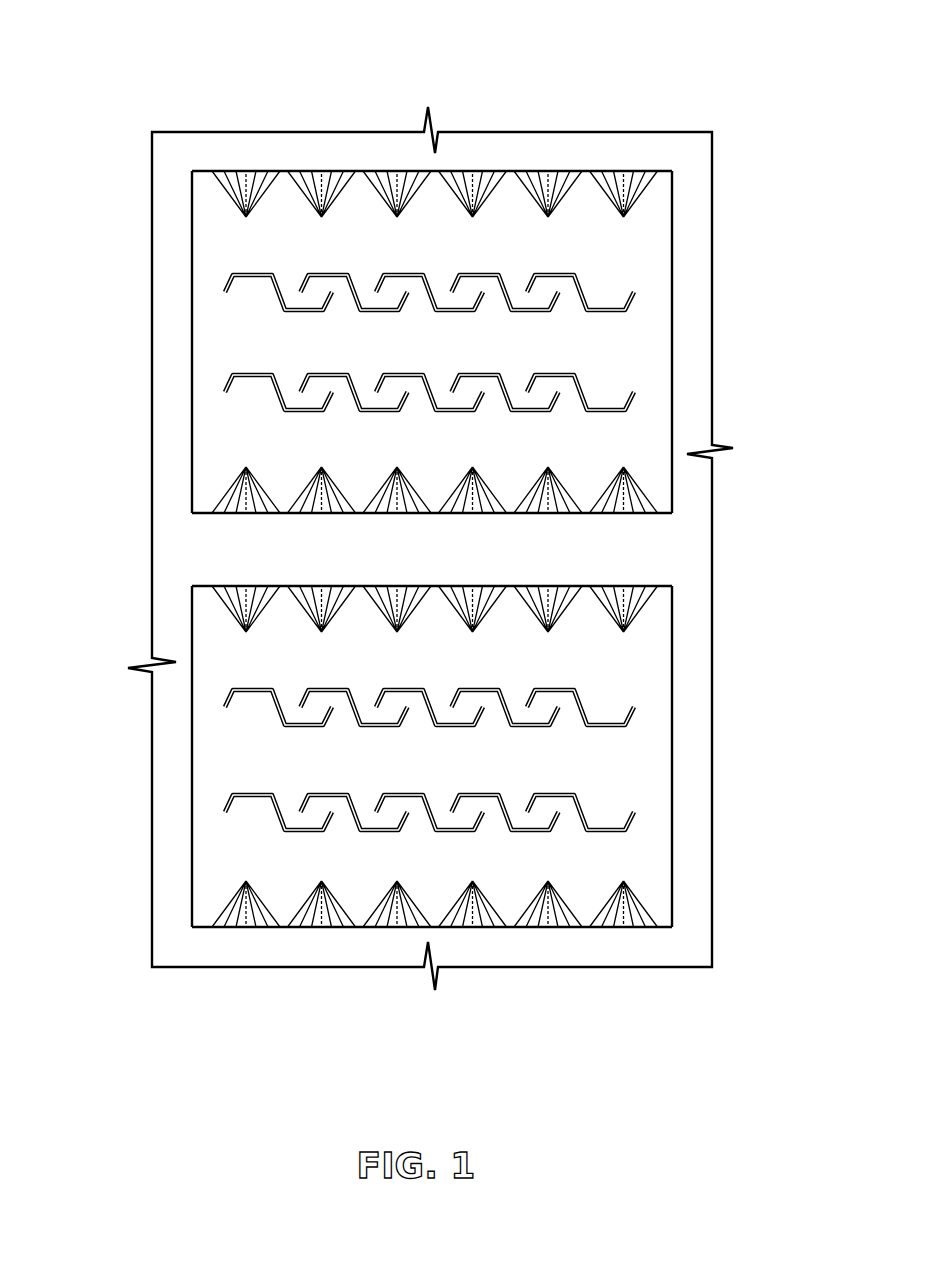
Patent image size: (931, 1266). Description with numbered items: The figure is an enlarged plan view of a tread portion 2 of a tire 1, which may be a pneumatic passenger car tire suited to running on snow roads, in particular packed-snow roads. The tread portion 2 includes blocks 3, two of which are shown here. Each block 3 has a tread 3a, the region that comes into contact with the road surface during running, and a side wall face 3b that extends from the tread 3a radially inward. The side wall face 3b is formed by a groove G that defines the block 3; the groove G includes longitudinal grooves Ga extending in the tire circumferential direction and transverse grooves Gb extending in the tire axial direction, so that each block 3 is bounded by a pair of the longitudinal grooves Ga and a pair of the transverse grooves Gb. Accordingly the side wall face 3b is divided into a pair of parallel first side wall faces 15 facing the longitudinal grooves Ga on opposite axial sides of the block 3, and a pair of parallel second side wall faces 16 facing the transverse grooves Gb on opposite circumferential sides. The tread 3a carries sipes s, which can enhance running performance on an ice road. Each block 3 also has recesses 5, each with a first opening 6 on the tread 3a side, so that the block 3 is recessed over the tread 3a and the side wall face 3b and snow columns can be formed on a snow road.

The tire 1 is at (444, 502).
The tread portion 2 is at (633, 110).
The block 3 is at (638, 253).
The tread 3a is at (238, 748).
The side wall face 3b is at (638, 925).
The recess 5 is at (228, 182).
The first opening 6 is at (393, 182).
The first side wall faces 15 is at (191, 216).
The second side wall faces 16 is at (313, 180).
The sipes s is at (223, 287).
The groove G is at (67, 435).
The longitudinal grooves Ga is at (692, 350).
The transverse grooves Gb is at (507, 148).